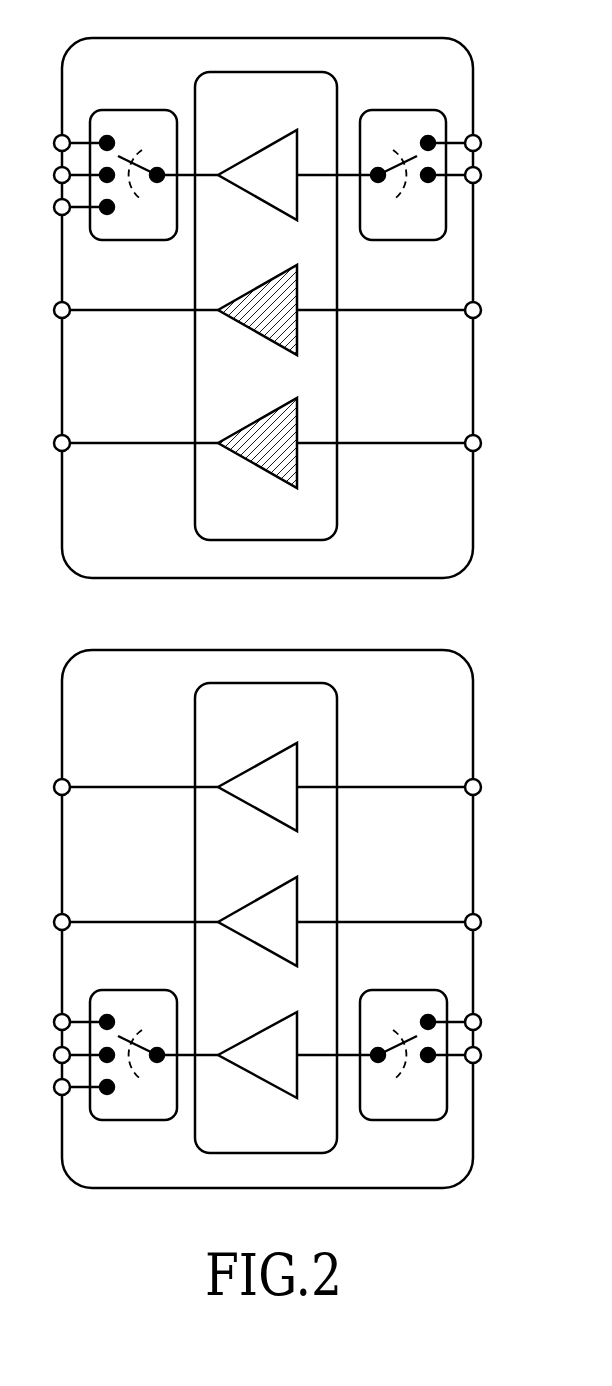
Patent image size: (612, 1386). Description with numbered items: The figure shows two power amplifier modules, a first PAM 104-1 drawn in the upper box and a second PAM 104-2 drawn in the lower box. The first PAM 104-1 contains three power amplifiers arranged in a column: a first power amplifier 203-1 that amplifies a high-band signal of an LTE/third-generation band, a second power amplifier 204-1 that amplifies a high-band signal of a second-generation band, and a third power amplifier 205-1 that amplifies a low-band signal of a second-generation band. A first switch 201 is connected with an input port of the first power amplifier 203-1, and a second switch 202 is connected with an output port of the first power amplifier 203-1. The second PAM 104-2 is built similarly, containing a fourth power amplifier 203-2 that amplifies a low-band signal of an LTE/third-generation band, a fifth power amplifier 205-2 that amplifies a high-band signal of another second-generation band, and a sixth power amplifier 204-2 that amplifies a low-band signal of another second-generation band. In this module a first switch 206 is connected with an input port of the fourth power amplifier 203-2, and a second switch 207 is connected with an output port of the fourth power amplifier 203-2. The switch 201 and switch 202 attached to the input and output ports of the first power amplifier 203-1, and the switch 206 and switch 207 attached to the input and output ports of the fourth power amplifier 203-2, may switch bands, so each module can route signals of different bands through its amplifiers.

The first PAM 104-1 is at (372, 38).
The second PAM 104-2 is at (372, 650).
The first switch 201 is at (390, 110).
The second switch 202 is at (118, 110).
The first power amplifier 203-1 is at (268, 208).
The second power amplifier 204-1 is at (268, 341).
The third power amplifier 205-1 is at (268, 474).
The fifth power amplifier 205-2 is at (270, 763).
The sixth power amplifier 204-2 is at (270, 898).
The fourth power amplifier 203-2 is at (268, 1088).
The first switch 206 is at (390, 990).
The second switch 207 is at (118, 990).